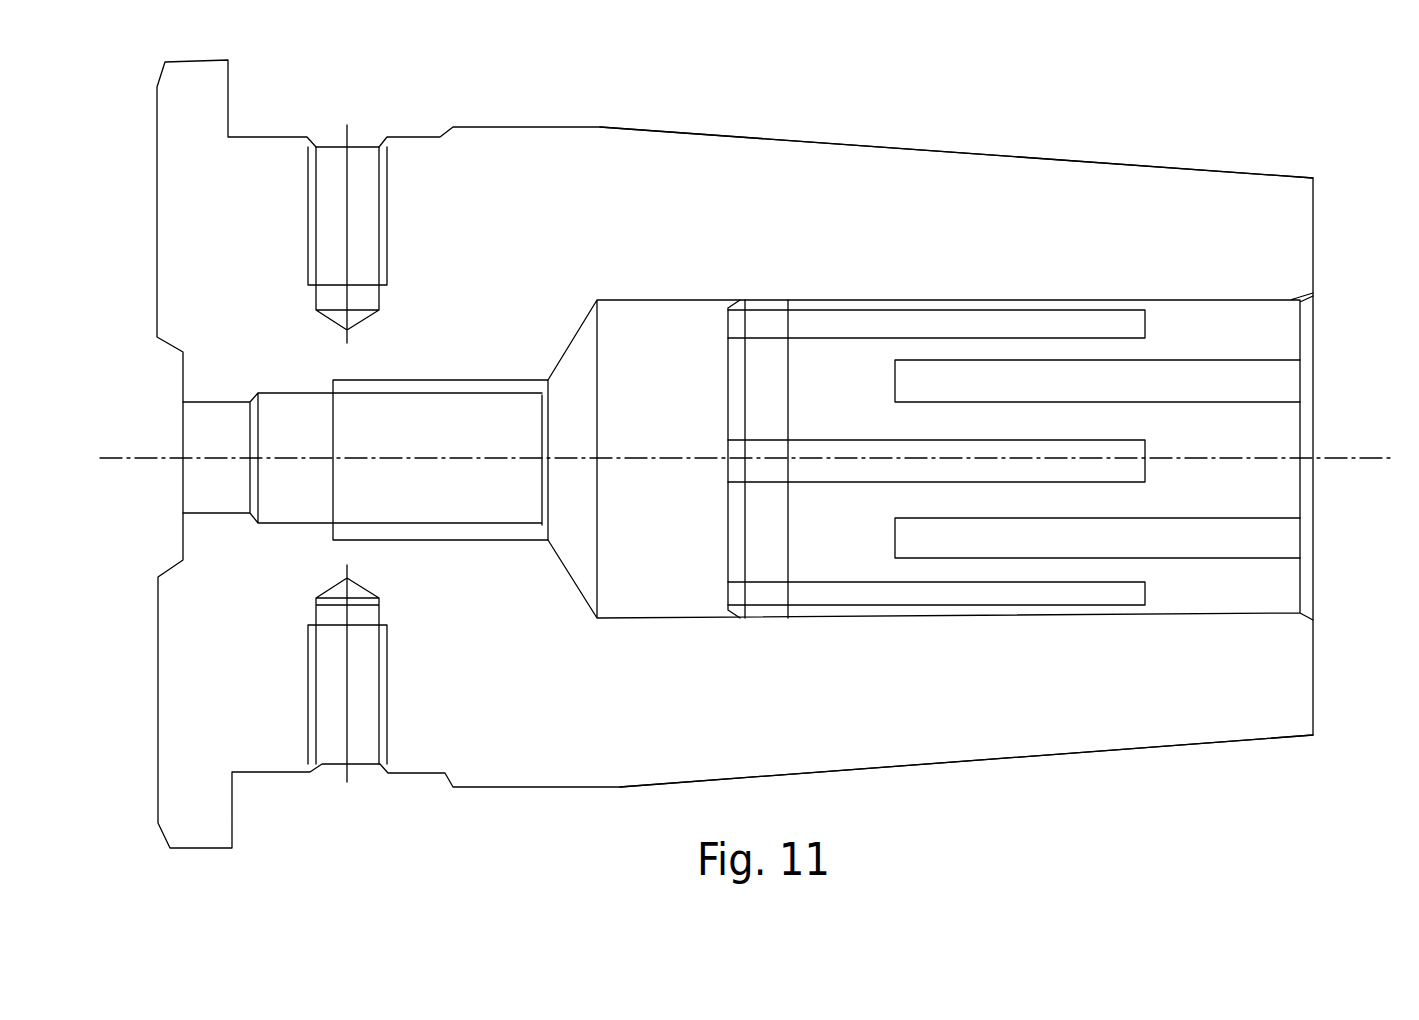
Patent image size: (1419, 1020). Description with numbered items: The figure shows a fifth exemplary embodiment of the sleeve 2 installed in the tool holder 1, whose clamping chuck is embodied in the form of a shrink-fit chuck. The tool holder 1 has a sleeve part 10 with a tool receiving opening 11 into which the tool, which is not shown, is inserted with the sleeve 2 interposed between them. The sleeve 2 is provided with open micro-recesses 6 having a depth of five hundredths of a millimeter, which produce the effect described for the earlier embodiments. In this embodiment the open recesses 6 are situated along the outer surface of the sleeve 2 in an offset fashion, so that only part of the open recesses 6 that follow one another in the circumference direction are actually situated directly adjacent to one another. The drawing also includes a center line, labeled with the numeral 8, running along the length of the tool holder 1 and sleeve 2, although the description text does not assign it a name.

The tool holder 1 is at (740, 100).
The sleeve 2 is at (954, 258).
The open micro-recesses 6 is at (833, 323).
The longitudinal axis 8 is at (1333, 457).
The sleeve part 10 is at (1135, 202).
The tool receiving opening 11 is at (1032, 570).